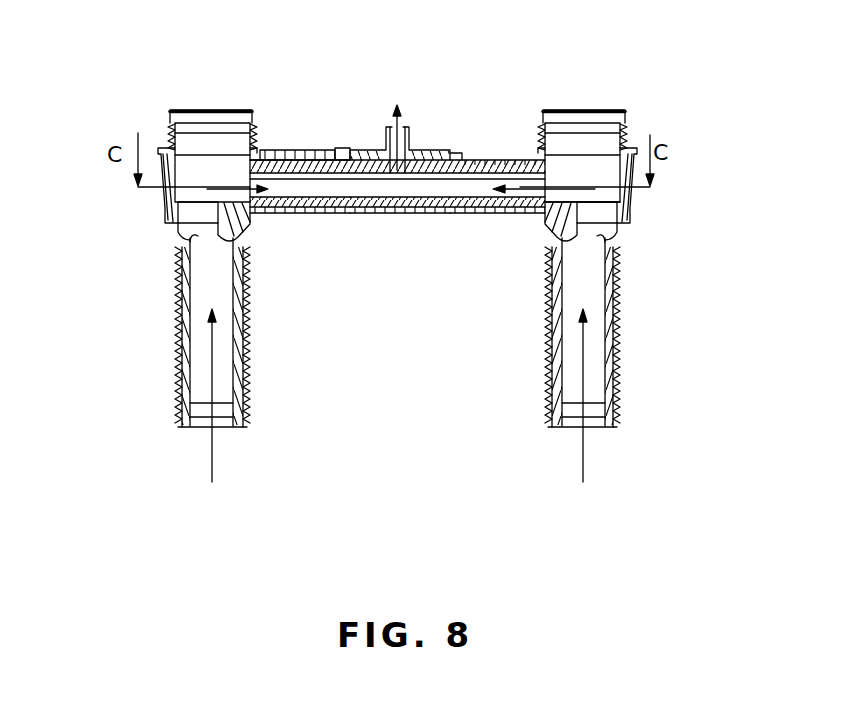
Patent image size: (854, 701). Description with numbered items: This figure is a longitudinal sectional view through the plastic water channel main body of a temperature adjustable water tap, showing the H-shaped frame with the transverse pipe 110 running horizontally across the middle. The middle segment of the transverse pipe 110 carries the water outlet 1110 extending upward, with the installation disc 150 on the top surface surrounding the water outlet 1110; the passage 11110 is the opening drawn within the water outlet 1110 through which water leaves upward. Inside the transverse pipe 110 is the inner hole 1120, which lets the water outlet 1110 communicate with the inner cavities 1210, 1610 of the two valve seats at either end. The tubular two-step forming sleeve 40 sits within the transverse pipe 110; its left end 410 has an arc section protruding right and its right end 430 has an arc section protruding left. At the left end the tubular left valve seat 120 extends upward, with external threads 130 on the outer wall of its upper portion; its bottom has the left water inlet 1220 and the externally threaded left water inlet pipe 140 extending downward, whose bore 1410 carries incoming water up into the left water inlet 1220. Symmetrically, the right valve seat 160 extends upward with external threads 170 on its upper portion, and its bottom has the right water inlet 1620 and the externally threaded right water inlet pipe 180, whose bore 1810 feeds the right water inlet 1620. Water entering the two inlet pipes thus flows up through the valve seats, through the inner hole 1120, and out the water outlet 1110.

The inner cavity of left valve seat 1210 is at (212, 122).
The external threads 130 is at (162, 121).
The left valve seat 120 is at (172, 177).
The left water inlet 1220 is at (208, 208).
The first pipe inner channel 1410 is at (208, 277).
The left water inlet pipe 140 is at (176, 340).
The inner cavity of right valve seat 1610 is at (578, 160).
The external threads 170 is at (628, 130).
The right valve seat 160 is at (618, 204).
The right water inlet 1620 is at (597, 237).
The second pipe inner channel 1810 is at (583, 300).
The right water inlet pipe 180 is at (617, 362).
The transverse pipe 110 is at (477, 172).
The left end of two-step forming sleeve 410 is at (283, 160).
The installation disc 150 is at (343, 152).
The water outlet 1110 is at (411, 142).
The nozzle outlet channel 11110 is at (396, 150).
The inner hole 1120 is at (336, 200).
The two-step forming sleeve 40 is at (404, 200).
The right end of two-step forming sleeve 430 is at (514, 200).